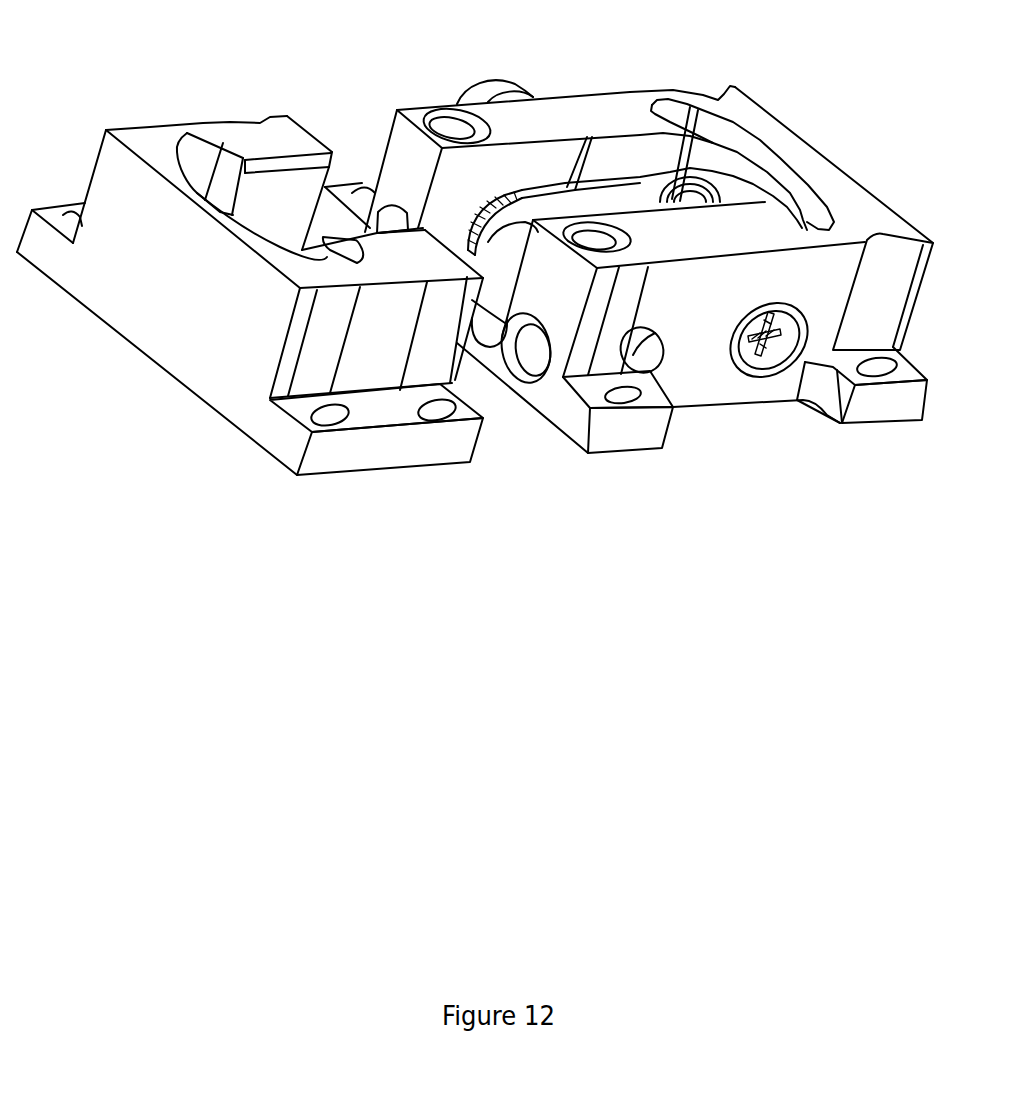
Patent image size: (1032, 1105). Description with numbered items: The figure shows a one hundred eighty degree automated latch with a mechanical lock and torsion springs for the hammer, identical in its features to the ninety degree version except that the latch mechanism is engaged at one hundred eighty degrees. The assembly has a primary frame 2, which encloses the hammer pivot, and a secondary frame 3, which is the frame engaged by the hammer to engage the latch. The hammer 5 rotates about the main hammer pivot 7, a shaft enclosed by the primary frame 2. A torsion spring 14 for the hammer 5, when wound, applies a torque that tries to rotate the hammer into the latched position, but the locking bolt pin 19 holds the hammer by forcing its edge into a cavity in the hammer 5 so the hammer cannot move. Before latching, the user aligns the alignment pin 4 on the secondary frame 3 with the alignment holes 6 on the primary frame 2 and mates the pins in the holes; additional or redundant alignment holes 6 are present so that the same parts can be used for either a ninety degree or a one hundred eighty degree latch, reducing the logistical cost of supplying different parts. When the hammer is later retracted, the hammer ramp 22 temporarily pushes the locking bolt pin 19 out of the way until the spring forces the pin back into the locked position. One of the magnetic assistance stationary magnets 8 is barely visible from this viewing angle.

The primary frame 2 is at (863, 217).
The secondary frame 3 is at (133, 142).
The alignment pin 4 is at (313, 242).
The hammer 5 is at (618, 202).
The alignment holes 6 is at (483, 217).
The main hammer pivot 7 is at (635, 345).
The stationary magnets 8 is at (545, 357).
The torsion spring 14 is at (450, 133).
The locking bolt pin 19 is at (775, 353).
The hammer ramp 22 is at (675, 202).